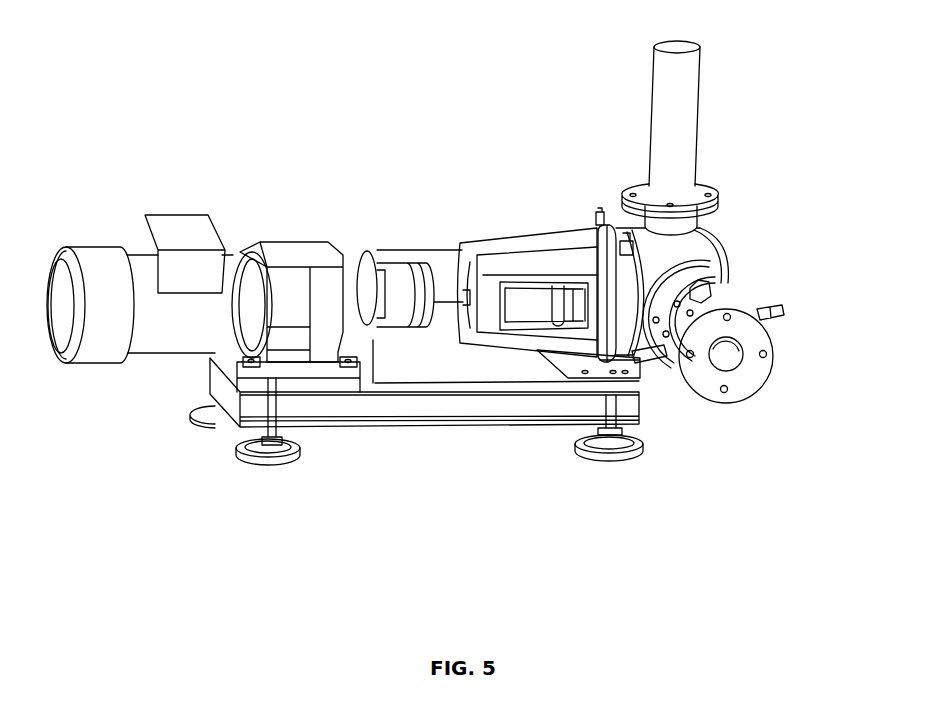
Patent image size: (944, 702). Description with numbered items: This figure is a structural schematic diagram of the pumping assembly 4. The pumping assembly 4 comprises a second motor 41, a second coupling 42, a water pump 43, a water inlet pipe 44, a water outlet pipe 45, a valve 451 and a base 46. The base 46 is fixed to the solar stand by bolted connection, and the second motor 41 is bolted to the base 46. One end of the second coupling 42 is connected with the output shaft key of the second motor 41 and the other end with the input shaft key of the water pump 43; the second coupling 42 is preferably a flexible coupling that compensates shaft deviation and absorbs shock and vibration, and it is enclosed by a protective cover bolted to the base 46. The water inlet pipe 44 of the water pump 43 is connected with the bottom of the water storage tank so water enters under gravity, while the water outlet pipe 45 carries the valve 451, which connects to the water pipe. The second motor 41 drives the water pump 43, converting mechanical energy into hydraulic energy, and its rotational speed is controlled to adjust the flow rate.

The pumping assembly 4 is at (275, 175).
The second motor 41 is at (161, 214).
The second coupling 42 is at (378, 251).
The water pump 43 is at (594, 252).
The water inlet pipe 44 is at (658, 159).
The water outlet pipe 45 is at (755, 357).
The valve 451 is at (723, 293).
The base 46 is at (343, 421).